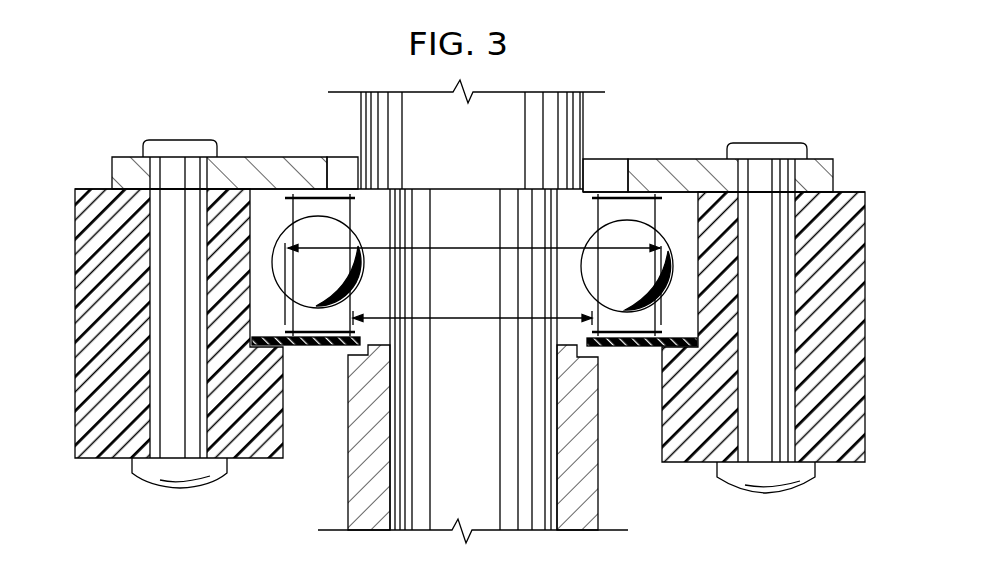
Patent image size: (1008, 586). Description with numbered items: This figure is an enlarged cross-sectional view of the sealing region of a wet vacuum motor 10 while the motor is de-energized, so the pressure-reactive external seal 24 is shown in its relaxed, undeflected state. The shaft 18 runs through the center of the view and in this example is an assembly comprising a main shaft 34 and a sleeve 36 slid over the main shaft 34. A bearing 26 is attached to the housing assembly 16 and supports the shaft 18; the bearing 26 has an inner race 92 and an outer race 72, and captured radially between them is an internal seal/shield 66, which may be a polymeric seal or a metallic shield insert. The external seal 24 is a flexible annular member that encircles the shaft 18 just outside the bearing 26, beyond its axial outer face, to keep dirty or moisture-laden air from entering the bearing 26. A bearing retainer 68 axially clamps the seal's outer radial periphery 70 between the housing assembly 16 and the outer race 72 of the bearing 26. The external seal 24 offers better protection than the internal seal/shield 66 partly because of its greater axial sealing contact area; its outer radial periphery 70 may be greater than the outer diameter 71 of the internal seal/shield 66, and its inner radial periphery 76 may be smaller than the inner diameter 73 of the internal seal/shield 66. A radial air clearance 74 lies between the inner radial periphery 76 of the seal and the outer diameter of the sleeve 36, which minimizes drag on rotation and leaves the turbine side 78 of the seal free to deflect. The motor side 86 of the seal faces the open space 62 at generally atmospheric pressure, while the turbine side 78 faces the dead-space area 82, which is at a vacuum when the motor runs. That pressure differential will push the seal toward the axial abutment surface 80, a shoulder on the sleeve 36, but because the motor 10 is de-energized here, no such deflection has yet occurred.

The wet vacuum motor 10 is at (717, 83).
The housing assembly 16 is at (105, 460).
The shaft 18 is at (586, 108).
The pressure-reactive external seal 24 is at (308, 347).
The bearing 26 is at (703, 158).
The main shaft 34 is at (356, 112).
The sleeve 36 is at (347, 508).
The open space 62 is at (317, 143).
The internal seal/shield 66 is at (352, 207).
The bearing retainer 68 is at (238, 157).
The outer radial periphery 70 is at (207, 331).
The outer diameter 71 is at (482, 247).
The outer race 72 is at (274, 186).
The inner diameter 73 is at (483, 314).
The radial air clearance 74 is at (560, 328).
The inner radial periphery 76 is at (370, 341).
The turbine side 78 is at (320, 347).
The axial abutment surface 80 is at (343, 348).
The dead-space area 82 is at (617, 432).
The motor side 86 is at (348, 309).
The inner race 92 is at (377, 233).